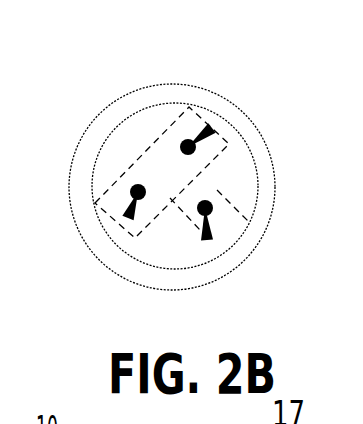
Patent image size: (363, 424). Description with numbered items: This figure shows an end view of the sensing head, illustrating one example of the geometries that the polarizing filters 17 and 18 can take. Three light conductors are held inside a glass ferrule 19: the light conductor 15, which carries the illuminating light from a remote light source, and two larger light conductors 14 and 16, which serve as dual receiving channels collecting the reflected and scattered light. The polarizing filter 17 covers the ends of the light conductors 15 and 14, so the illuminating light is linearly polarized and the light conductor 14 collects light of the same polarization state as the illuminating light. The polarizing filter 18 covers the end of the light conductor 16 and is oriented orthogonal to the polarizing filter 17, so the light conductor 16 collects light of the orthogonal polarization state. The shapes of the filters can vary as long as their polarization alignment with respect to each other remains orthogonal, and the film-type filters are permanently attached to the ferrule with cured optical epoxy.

The light conductor 14 is at (212, 128).
The light conductor 15 is at (128, 218).
The light conductor 16 is at (207, 240).
The polarizing filter 17 is at (146, 129).
The polarizing filter 18 is at (247, 237).
The glass ferrule 19 is at (158, 90).